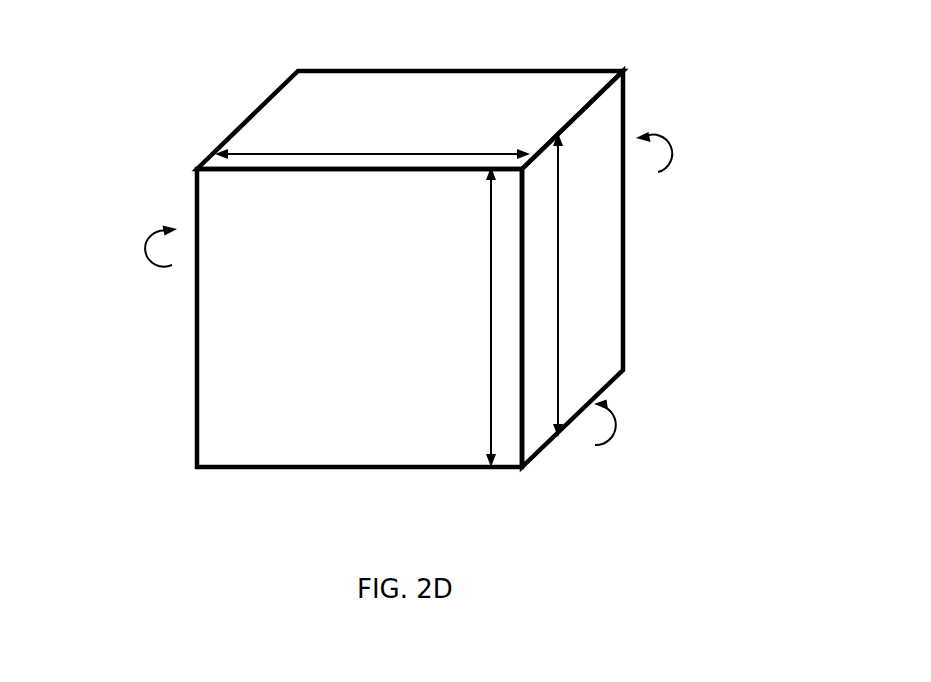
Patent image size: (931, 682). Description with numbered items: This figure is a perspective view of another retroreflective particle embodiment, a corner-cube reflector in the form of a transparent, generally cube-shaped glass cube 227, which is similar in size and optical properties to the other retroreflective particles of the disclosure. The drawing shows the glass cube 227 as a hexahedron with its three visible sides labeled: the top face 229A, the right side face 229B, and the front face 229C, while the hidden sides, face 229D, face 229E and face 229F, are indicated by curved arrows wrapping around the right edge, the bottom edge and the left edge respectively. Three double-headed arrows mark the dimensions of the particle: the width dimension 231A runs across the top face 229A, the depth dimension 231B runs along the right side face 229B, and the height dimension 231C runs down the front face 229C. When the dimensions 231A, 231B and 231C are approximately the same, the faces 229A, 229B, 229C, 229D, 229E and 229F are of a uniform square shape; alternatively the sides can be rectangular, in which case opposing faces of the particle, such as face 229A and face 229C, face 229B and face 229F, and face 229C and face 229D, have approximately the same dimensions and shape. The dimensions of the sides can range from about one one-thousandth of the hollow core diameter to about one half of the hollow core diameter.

The glass cube 227 is at (416, 234).
The face 229A is at (465, 105).
The face 229B is at (578, 296).
The face 229C is at (257, 296).
The face 229D is at (665, 172).
The face 229E is at (593, 440).
The face 229F is at (145, 267).
The dimension 231A is at (325, 154).
The dimension 231B is at (560, 334).
The dimension 231C is at (493, 387).